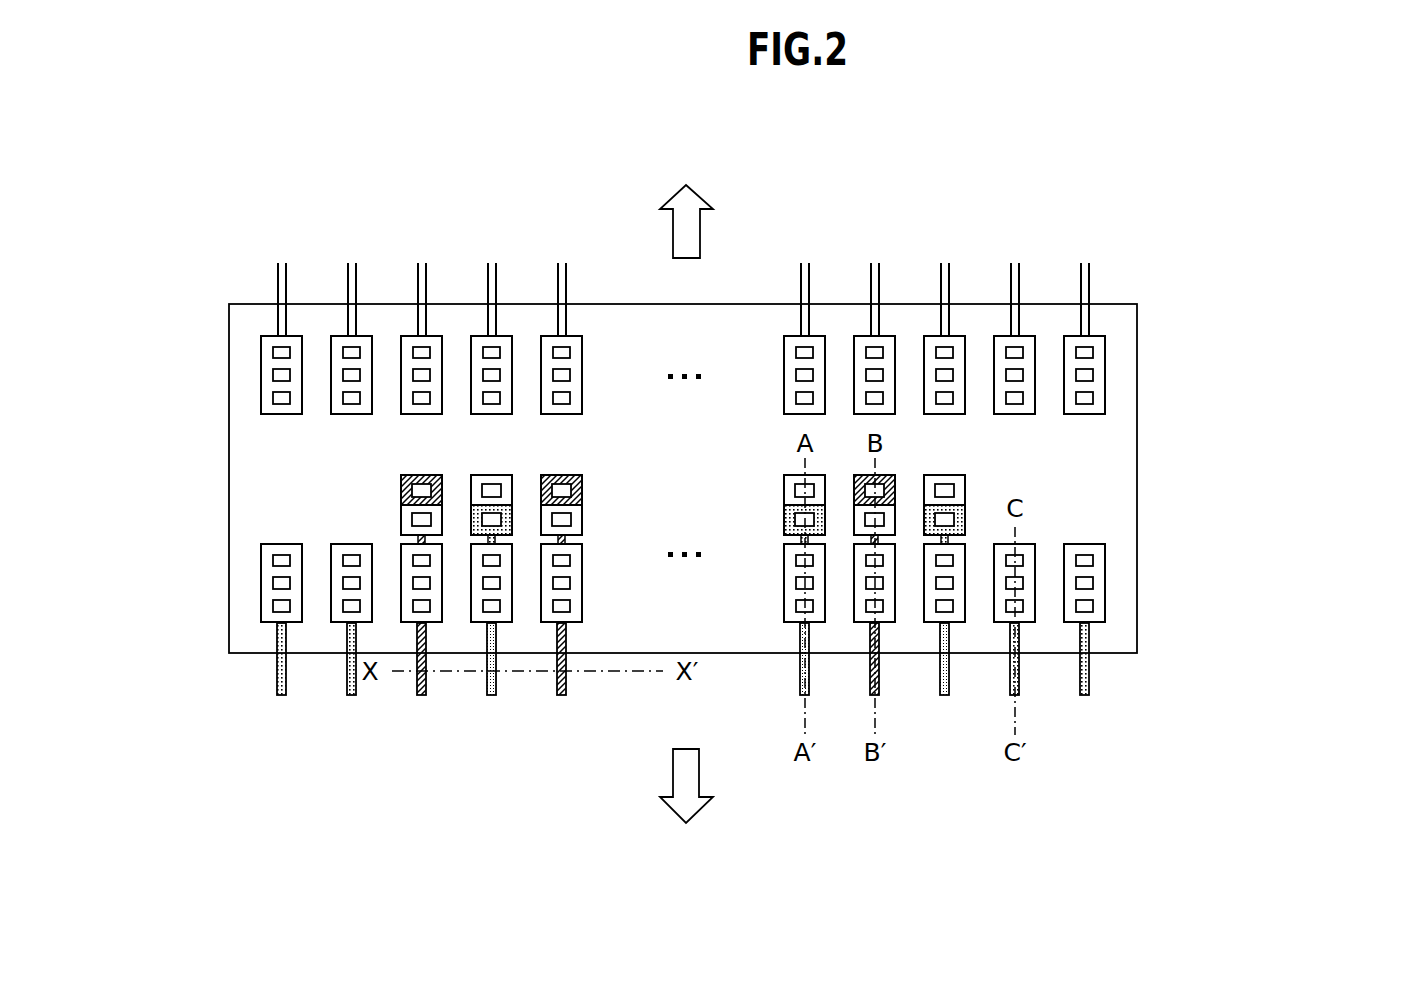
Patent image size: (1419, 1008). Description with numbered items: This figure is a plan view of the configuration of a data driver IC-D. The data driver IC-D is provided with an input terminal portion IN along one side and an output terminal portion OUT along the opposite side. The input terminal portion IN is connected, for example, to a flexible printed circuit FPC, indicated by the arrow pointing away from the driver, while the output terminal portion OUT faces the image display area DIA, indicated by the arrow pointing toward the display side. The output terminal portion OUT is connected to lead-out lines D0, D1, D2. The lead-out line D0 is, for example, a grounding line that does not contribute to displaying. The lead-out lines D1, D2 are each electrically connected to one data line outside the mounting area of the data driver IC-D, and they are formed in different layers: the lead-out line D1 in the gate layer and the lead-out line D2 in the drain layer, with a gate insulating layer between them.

The data driver IC IC-D is at (229, 432).
The flexible printed circuit FPC is at (686, 197).
The image display area DIA is at (692, 809).
The input terminal portion IN is at (1162, 333).
The output terminal portion OUT is at (1162, 465).
The lead-out line D0 is at (286, 683).
The lead-out line D1 is at (426, 683).
The lead-out line D2 is at (496, 683).